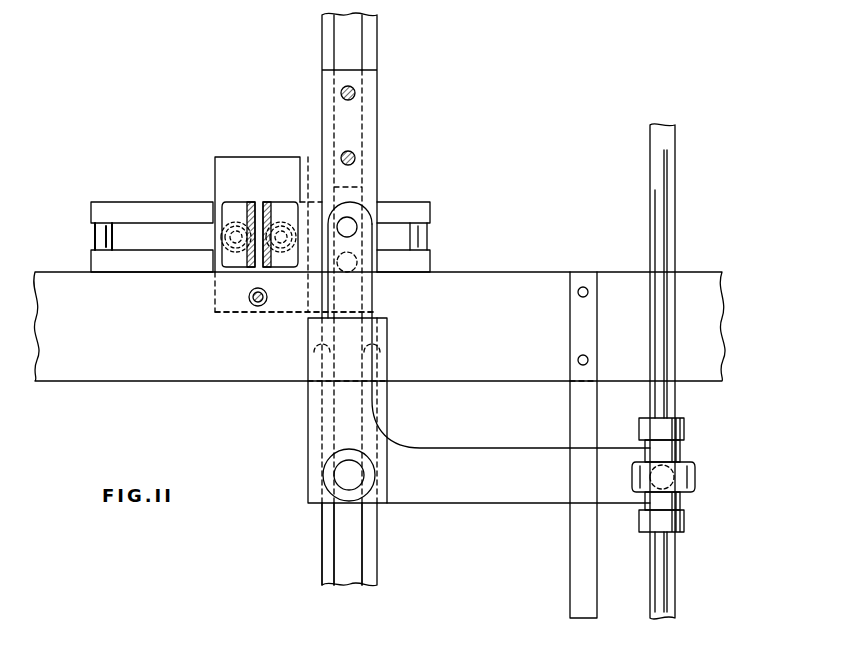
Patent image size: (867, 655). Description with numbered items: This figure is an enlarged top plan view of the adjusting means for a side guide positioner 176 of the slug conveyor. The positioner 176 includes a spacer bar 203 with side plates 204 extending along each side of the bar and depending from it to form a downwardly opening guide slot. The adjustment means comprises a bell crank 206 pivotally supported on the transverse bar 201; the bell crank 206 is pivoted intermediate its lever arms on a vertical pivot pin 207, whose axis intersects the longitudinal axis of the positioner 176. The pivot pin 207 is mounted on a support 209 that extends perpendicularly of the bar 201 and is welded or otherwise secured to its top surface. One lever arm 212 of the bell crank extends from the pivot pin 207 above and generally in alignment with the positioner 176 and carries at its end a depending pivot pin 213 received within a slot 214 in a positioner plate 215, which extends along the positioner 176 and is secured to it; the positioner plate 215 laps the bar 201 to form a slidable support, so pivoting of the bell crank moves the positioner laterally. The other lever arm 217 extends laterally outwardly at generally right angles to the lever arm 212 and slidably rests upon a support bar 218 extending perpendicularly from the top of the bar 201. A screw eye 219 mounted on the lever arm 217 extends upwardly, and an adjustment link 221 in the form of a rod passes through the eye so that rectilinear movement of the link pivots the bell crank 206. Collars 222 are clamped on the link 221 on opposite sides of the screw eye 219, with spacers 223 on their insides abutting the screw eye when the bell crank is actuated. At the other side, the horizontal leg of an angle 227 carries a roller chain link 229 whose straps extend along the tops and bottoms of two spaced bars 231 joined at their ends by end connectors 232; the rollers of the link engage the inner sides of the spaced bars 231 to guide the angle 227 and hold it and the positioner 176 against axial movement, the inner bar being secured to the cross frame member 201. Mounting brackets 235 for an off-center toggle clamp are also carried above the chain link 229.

The side guide positioner 176 is at (312, 541).
The transverse bar 201 is at (522, 272).
The spacer bar 203 is at (353, 578).
The side plates 204 is at (326, 578).
The bell crank 206 is at (482, 515).
The vertical pivot pin 207 is at (345, 475).
The support 209 is at (310, 410).
The lever arm 212 is at (372, 316).
The pivot pin 213 is at (370, 218).
The slot 214 is at (355, 215).
The positioner plate 215 is at (368, 121).
The lever arm 217 is at (487, 458).
The support bar 218 is at (578, 582).
The screw eye 219 is at (696, 476).
The adjustment link 221 is at (672, 401).
The collar 222 is at (686, 429).
The spacer 223 is at (683, 444).
The angle 227 is at (214, 302).
The roller chain link 229 is at (297, 255).
The spaced bars 231 is at (136, 208).
The end connector 232 is at (93, 240).
The mounting bracket 235 is at (235, 200).